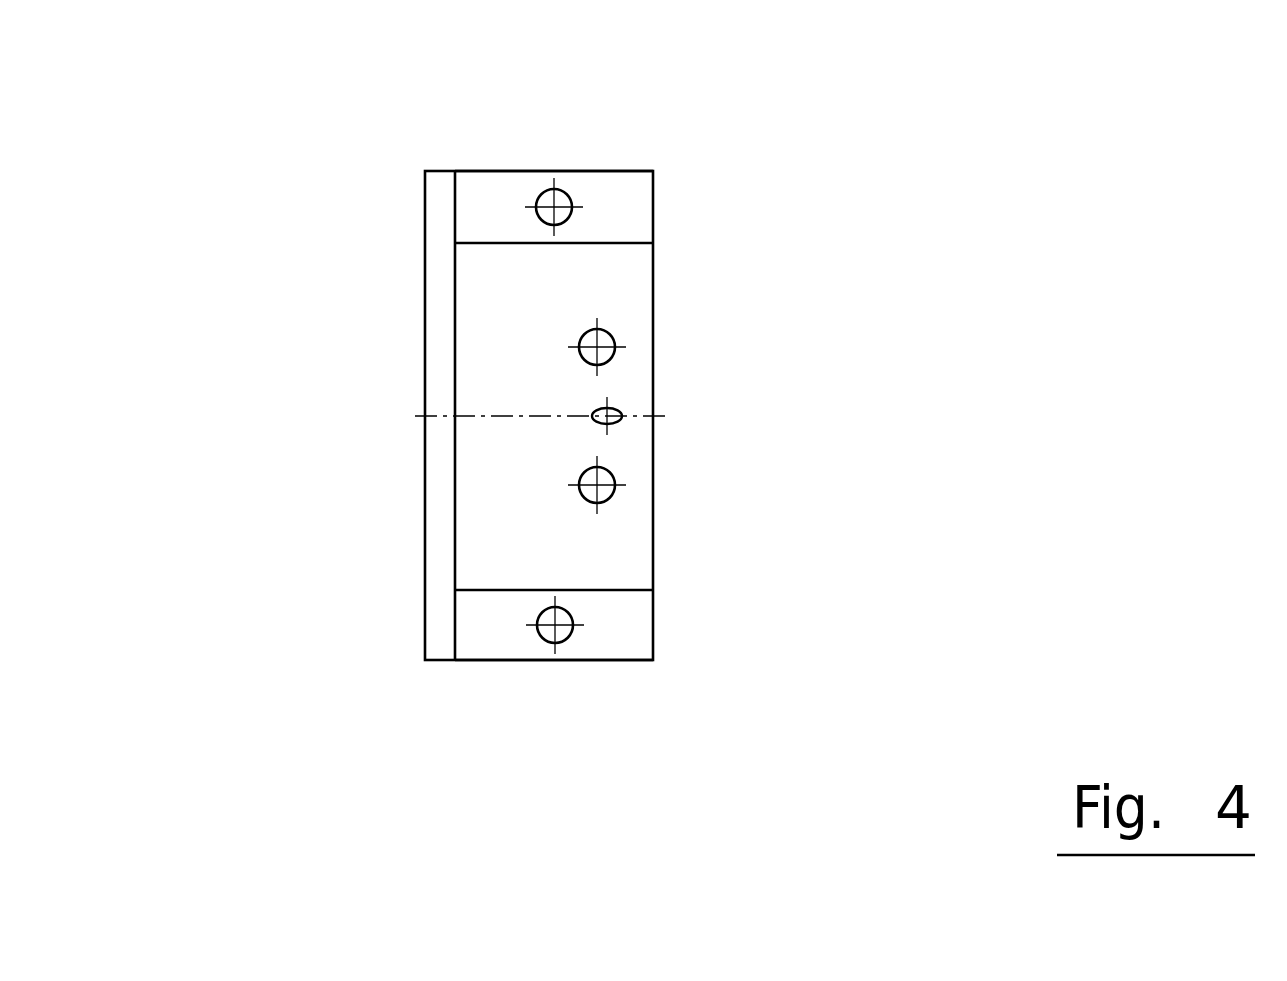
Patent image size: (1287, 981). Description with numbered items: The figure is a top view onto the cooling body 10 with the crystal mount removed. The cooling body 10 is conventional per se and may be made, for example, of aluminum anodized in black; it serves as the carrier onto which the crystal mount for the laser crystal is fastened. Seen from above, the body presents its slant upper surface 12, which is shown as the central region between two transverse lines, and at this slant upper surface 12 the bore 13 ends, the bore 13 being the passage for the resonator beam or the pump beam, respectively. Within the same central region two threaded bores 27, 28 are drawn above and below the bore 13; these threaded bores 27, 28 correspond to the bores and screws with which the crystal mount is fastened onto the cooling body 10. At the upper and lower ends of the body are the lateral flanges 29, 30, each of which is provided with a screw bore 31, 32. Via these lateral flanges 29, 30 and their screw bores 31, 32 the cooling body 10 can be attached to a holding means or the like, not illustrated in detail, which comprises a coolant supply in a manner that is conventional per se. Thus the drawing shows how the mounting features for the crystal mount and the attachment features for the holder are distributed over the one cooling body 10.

The cooling body 10 is at (495, 172).
The slant upper surface 12 is at (553, 313).
The bore 13 is at (620, 420).
The threaded bore 27 is at (610, 333).
The threaded bore 28 is at (610, 496).
The lateral flange 29 is at (484, 206).
The lateral flange 30 is at (500, 632).
The screw bore 31 is at (568, 194).
The screw bore 32 is at (568, 640).